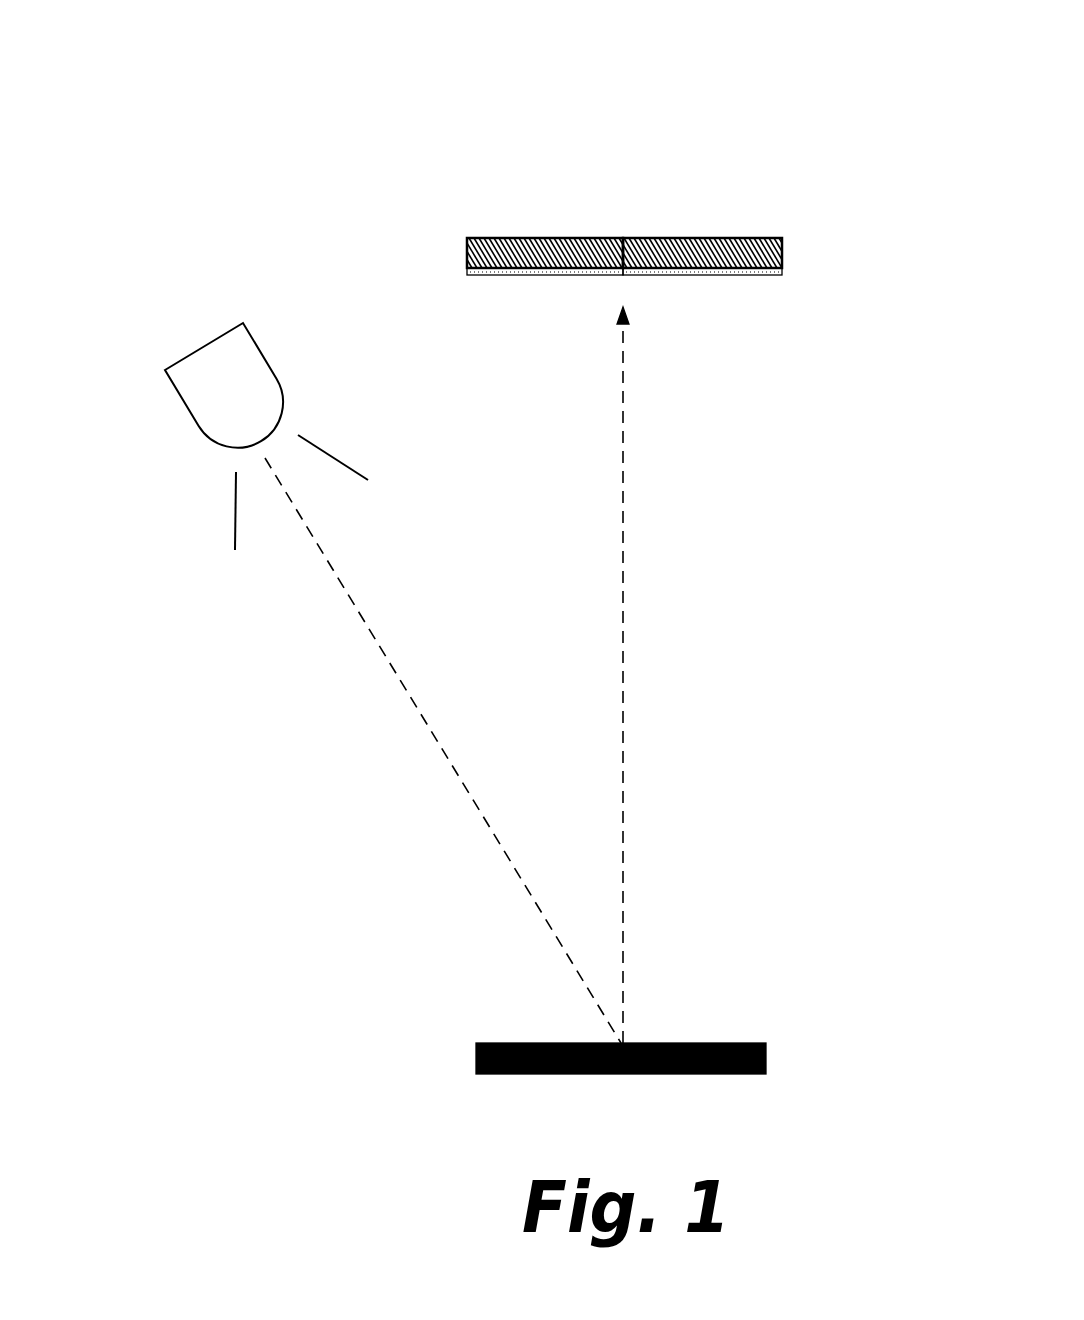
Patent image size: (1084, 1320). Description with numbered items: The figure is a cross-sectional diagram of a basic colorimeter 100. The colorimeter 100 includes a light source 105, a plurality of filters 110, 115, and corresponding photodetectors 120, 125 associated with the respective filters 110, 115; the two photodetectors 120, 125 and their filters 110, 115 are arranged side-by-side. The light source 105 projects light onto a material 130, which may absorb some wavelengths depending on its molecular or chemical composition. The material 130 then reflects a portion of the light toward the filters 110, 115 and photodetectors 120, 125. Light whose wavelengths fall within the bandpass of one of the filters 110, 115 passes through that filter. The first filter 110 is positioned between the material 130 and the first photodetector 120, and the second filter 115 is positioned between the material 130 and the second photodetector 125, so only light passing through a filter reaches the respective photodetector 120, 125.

The colorimeter 100 is at (330, 108).
The light source 105 is at (230, 382).
The first filter 110 is at (742, 275).
The second filter 115 is at (538, 275).
The first photodetector 120 is at (747, 238).
The second photodetector 125 is at (544, 238).
The material 130 is at (722, 1020).